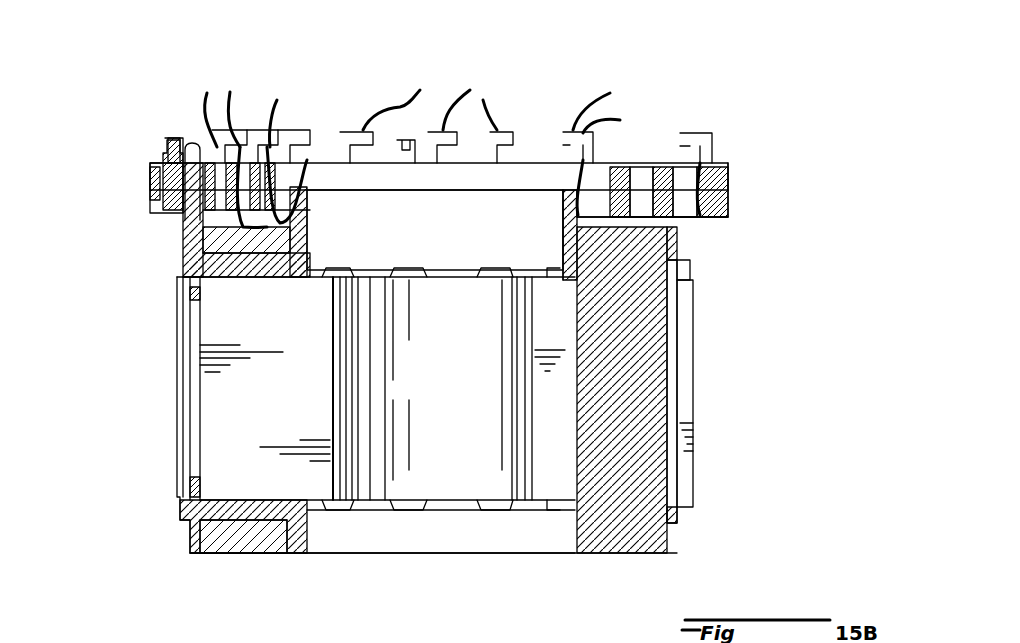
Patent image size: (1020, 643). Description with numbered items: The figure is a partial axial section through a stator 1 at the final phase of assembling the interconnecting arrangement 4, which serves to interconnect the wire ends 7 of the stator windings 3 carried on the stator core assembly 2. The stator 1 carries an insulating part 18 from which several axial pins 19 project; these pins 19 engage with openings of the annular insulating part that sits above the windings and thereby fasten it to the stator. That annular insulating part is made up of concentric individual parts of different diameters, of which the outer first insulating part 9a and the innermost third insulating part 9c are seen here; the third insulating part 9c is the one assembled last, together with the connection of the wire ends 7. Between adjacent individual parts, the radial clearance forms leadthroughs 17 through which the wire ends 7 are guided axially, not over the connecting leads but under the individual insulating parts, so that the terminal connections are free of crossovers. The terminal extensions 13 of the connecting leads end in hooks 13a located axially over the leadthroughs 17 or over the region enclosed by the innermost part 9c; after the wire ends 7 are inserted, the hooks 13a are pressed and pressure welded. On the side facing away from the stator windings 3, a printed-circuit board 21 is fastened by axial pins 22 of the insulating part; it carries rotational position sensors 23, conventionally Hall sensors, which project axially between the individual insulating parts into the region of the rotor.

The stator 1 is at (742, 303).
The stator core assembly 2 is at (247, 398).
The stator windings 3 is at (633, 373).
The interconnecting arrangement 4 is at (625, 63).
The wire ends 7 is at (397, 107).
The first insulating part 9a is at (713, 220).
The third insulating part 9c is at (540, 170).
The terminal extensions 13 is at (350, 133).
The end hooks 13a is at (310, 133).
The leadthroughs 17 is at (640, 163).
The insulating part 18 is at (183, 253).
The axial pins 19 is at (197, 143).
The printed-circuit board 21 is at (195, 642).
The axial pins 22 is at (173, 137).
The rotational position sensors 23 is at (295, 642).